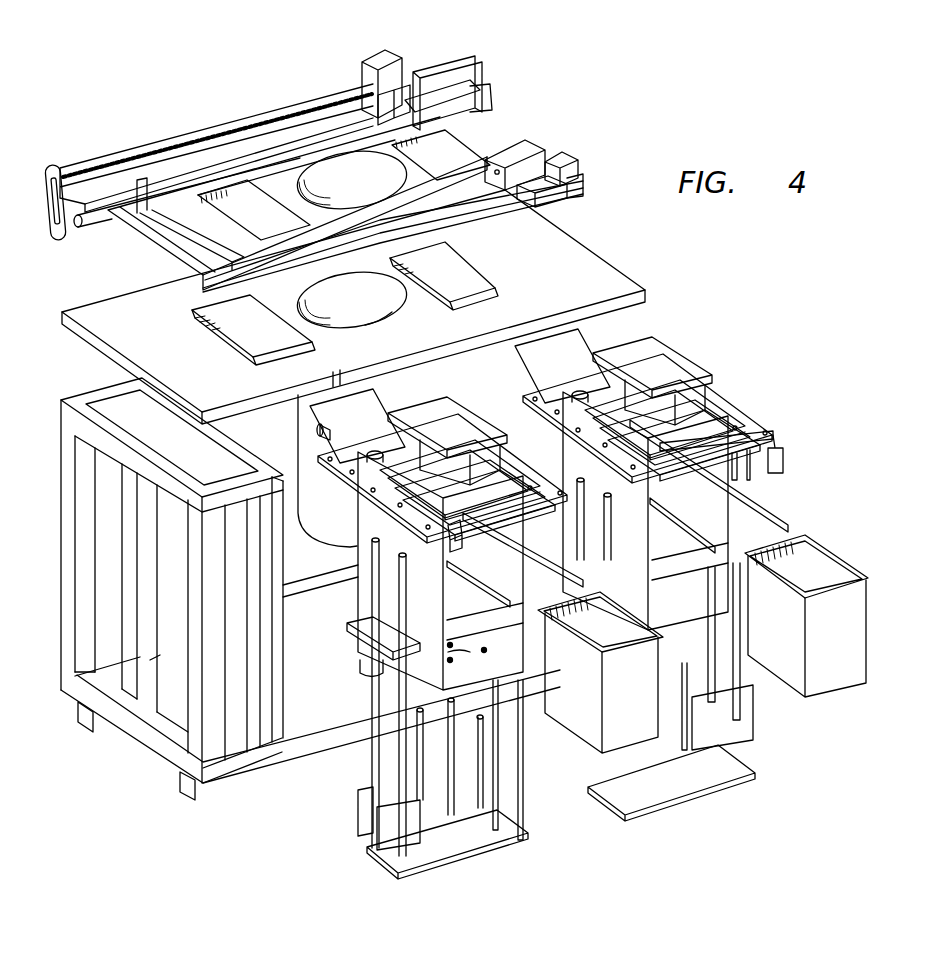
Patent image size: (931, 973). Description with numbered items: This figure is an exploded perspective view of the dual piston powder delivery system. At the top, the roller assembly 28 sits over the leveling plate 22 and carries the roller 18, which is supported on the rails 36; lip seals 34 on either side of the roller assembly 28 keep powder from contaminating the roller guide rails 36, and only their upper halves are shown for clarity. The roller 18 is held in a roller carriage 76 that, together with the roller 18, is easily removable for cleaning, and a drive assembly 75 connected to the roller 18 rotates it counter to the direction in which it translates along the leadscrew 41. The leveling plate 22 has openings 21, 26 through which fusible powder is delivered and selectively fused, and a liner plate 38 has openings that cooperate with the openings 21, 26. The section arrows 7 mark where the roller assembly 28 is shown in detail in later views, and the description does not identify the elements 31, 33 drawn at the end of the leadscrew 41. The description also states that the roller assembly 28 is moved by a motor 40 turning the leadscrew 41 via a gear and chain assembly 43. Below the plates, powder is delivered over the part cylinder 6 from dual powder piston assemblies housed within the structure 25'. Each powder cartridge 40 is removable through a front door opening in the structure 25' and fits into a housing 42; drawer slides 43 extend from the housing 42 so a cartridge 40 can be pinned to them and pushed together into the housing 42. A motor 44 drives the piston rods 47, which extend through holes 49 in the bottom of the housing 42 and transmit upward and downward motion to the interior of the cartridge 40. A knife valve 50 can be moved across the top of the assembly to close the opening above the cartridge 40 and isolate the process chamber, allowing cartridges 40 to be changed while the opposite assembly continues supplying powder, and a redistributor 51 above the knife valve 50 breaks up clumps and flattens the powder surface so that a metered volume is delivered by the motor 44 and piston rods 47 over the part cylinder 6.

The part cylinder 6 is at (312, 530).
The section line 7- 7 is at (370, 50).
The roller 18 is at (440, 143).
The opening 21 is at (236, 330).
The leveling plate 22 is at (614, 278).
The structure 25' is at (310, 589).
The opening 26 is at (390, 308).
The roller assembly 28 is at (500, 104).
The rod 31 is at (92, 232).
The handle 33 is at (56, 164).
The lip seal 34 is at (556, 145).
The roller guide rail 36 is at (582, 176).
The liner plate 38 is at (195, 224).
The powder cartridge 40 is at (640, 703).
The leadscrew 41 is at (180, 140).
The housing 42 is at (438, 593).
The drawer slide 43 is at (477, 578).
The motor 44 is at (370, 664).
The piston rod 47 is at (418, 755).
The hole 49 is at (475, 655).
The knife valve 50 is at (373, 425).
The redistributor 51 is at (458, 430).
The drive assembly 75 is at (378, 62).
The roller carriage 76 is at (514, 145).